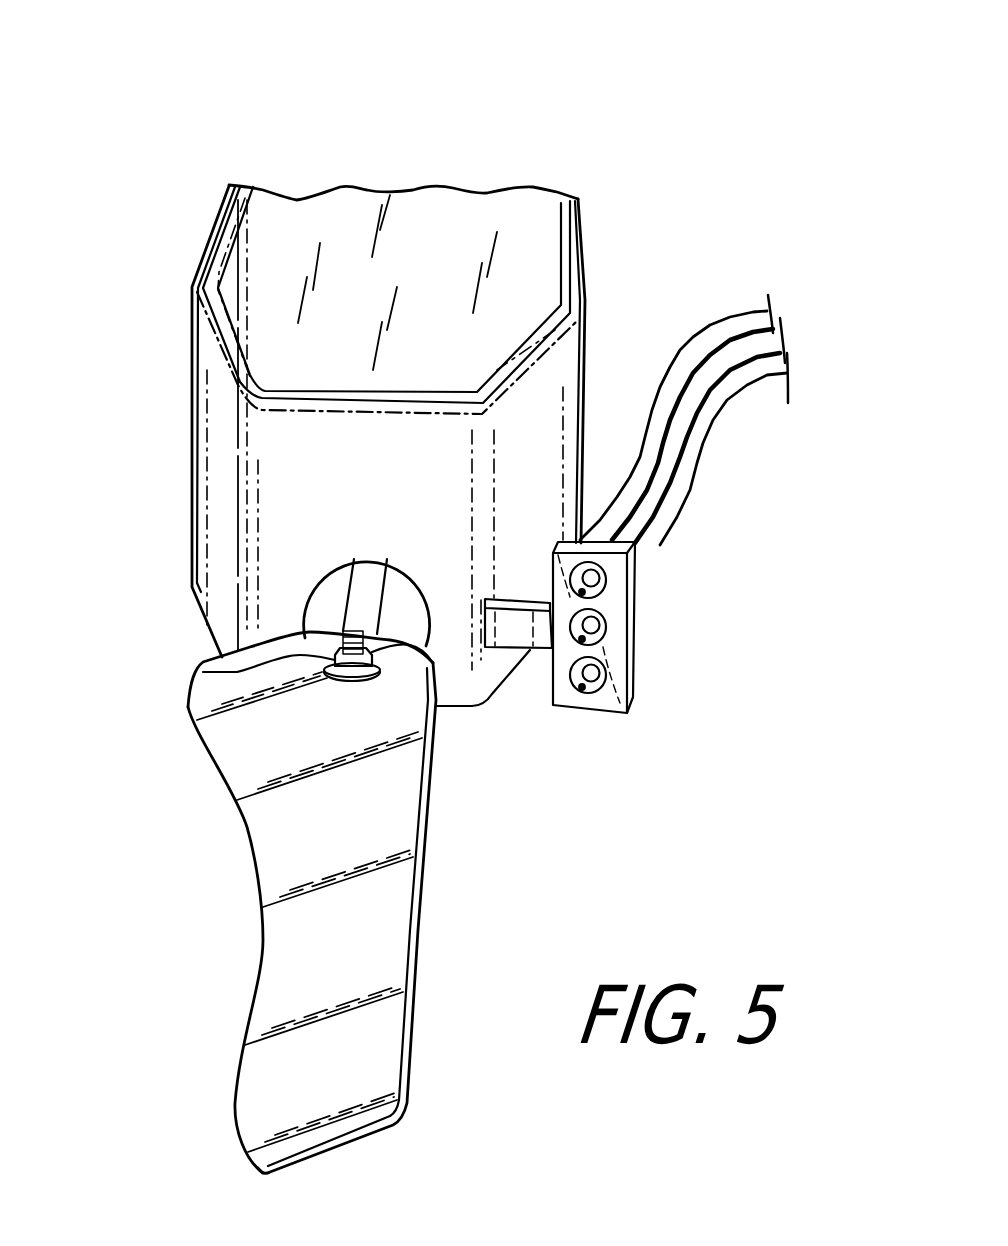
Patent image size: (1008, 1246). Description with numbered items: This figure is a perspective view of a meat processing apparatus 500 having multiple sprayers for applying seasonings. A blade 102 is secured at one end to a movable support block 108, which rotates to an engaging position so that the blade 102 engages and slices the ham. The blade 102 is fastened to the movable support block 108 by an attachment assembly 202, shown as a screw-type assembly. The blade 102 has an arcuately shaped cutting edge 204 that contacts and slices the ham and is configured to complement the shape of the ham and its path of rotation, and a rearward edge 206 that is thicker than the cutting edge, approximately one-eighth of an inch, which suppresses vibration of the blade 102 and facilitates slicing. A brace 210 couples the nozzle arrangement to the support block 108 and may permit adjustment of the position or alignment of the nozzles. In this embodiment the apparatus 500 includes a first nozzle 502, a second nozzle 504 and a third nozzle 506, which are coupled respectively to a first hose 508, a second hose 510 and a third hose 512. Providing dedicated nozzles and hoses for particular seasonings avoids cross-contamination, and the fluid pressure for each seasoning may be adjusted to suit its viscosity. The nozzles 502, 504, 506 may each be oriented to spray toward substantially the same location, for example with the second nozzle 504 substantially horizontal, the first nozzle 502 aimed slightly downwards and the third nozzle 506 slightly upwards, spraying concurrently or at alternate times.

The meat processing apparatus 500 is at (740, 138).
The movable support block 108 is at (223, 438).
The blade 102 is at (307, 1087).
The attachment assembly 202 is at (205, 665).
The cutting edge 204 is at (252, 855).
The rearward edge 206 is at (423, 907).
The brace 210 is at (512, 627).
The first nozzle 502 is at (592, 597).
The second nozzle 504 is at (593, 647).
The third nozzle 506 is at (593, 695).
The first hose 508 is at (697, 335).
The second hose 510 is at (778, 334).
The third hose 512 is at (703, 423).